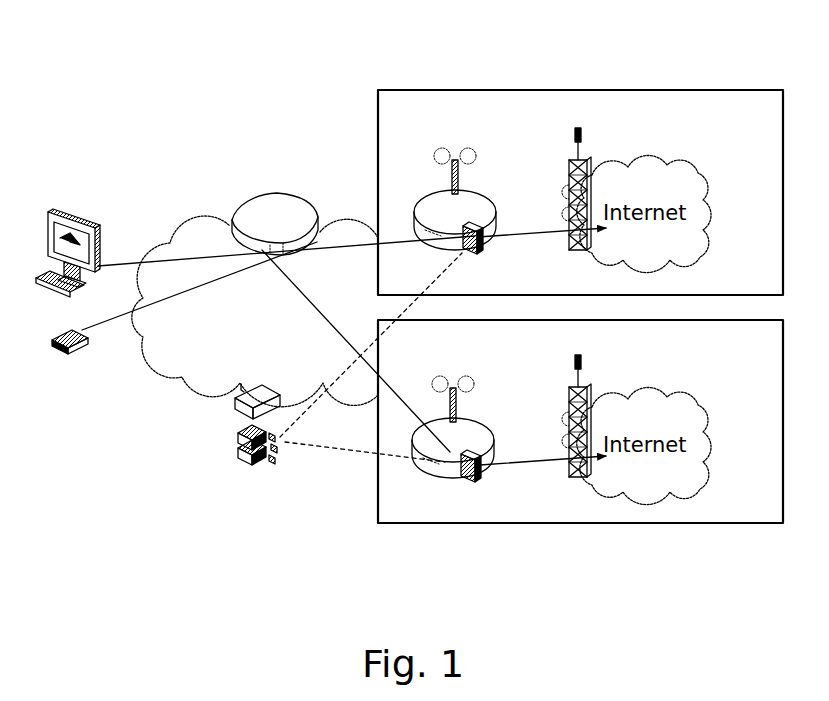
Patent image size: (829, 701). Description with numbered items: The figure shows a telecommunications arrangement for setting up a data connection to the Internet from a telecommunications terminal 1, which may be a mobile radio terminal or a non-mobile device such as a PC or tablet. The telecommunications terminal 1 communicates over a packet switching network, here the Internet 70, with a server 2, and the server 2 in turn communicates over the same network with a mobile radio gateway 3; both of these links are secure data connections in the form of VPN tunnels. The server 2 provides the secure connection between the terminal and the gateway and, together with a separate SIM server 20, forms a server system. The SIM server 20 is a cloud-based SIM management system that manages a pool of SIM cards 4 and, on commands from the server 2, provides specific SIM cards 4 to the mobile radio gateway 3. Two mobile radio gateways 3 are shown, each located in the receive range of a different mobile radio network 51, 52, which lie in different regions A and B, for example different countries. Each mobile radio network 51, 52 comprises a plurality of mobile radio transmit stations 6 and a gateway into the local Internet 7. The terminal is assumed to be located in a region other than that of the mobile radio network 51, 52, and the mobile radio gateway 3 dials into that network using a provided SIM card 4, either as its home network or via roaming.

The telecommunications terminal 1 is at (100, 238).
The server 2 is at (292, 194).
The mobile radio gateway 3 is at (480, 196).
The SIM card 4 is at (482, 252).
The mobile radio transmit station 6 is at (582, 158).
The Internet 7 is at (696, 160).
The SIM server 20 is at (234, 418).
The mobile radio network 51 is at (640, 90).
The mobile radio network 52 is at (600, 523).
The Internet 70 is at (148, 375).